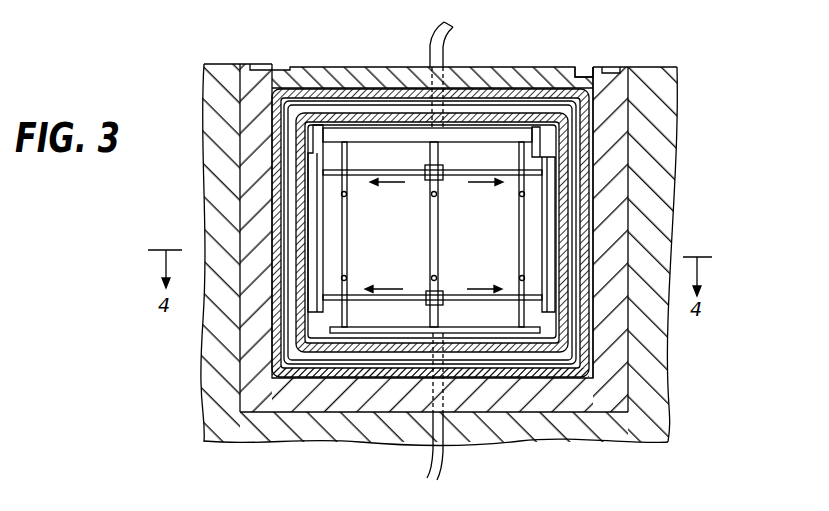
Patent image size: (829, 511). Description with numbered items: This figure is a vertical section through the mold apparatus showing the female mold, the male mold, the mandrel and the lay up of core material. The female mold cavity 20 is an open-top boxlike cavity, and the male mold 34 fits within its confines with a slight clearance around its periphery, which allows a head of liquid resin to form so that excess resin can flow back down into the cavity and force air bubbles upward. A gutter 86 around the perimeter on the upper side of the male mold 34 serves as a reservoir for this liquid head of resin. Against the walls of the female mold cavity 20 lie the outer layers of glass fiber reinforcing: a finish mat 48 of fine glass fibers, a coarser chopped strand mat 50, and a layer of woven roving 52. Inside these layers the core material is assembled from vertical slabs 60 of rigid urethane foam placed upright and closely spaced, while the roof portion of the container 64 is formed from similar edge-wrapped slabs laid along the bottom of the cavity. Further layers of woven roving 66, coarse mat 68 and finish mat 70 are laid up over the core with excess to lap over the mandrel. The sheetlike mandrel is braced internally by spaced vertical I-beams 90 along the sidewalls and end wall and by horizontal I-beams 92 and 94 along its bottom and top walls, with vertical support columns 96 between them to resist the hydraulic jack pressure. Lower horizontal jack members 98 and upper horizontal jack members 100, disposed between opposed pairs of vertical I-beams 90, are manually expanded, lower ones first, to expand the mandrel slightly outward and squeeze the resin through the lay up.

The female mold cavity 20 is at (622, 105).
The male mold section 34 is at (337, 66).
The finish mat 48 is at (364, 380).
The chopped strand mat 50 is at (332, 378).
The woven roving 52 is at (285, 378).
The slab 60 is at (277, 342).
The roof portion of the container 64 is at (508, 363).
The woven roving 66 is at (573, 207).
The coarse mat 68 is at (573, 228).
The finish mat 70 is at (573, 255).
The gutter 86 is at (585, 68).
The vertical I-beams 90 is at (321, 249).
The horizontal I-beams 92 is at (404, 328).
The horizontal I-beams 94 is at (456, 143).
The vertical support columns 96 is at (440, 241).
The lower horizontal jack members 98 is at (452, 292).
The upper horizontal jack members 100 is at (455, 177).